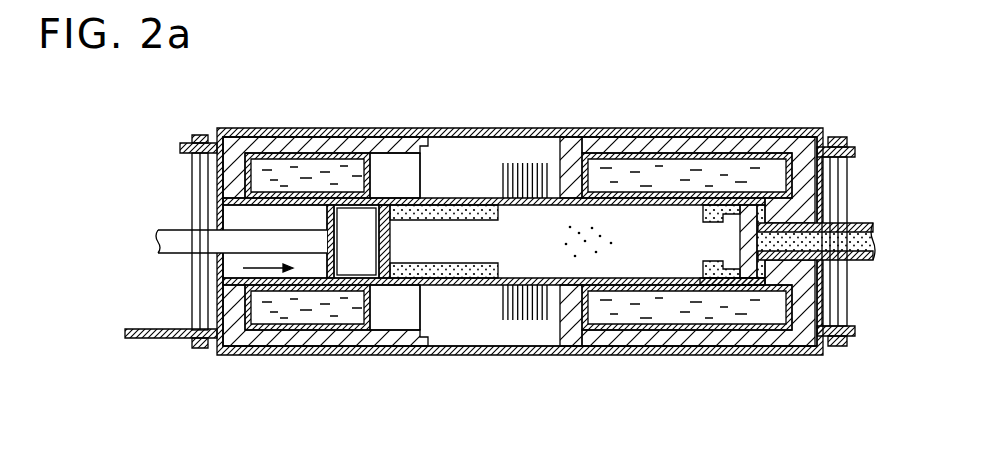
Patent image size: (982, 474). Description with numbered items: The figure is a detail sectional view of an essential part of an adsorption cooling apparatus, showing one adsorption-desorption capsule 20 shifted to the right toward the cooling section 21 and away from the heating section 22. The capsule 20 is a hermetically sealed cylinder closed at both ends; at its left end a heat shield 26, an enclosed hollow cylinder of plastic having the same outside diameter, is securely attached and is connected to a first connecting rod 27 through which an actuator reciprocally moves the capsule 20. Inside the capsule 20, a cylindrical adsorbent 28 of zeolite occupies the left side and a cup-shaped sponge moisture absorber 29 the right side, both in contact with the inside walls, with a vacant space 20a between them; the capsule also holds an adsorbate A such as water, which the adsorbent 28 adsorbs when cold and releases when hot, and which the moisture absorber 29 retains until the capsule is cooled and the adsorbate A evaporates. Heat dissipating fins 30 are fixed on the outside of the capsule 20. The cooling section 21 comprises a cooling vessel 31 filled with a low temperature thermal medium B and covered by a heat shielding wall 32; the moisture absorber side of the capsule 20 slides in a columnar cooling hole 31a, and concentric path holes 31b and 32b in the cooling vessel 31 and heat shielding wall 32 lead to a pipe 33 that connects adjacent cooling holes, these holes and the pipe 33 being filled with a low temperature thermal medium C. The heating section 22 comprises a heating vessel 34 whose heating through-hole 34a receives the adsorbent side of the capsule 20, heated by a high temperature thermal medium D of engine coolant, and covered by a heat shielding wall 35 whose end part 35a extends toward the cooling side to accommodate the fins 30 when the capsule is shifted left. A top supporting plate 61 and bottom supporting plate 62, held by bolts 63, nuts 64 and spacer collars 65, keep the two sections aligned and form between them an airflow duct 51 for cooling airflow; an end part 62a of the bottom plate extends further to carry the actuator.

The adsorption-desorption capsule 20 is at (456, 285).
The vacant space 20a is at (628, 260).
The cooling section 21 is at (721, 129).
The heating section 22 is at (280, 129).
The heat shield 26 is at (353, 285).
The first connecting rod 27 is at (170, 253).
The adsorbent 28 is at (463, 198).
The moisture absorber 29 is at (722, 285).
The heat dissipating fins 30 is at (522, 135).
The cooling vessel 31 is at (618, 162).
The cooling hole 31a is at (750, 278).
The path hole 31b is at (775, 228).
The heat shielding wall 32 is at (670, 145).
The path hole 32b is at (805, 258).
The pipe 33 is at (867, 216).
The heating vessel 34 is at (287, 176).
The heating through-hole 34a is at (300, 205).
The heat shielding wall 35 is at (251, 142).
The end part of heat shielding wall 35a is at (378, 147).
The airflow duct 51 is at (485, 170).
The top supporting plate 61 is at (568, 145).
The bottom supporting plate 62 is at (566, 355).
The end part of lower supporting plate 62a is at (145, 338).
The bolt 63 is at (196, 136).
The nut 64 is at (208, 348).
The spacer collar 65 is at (192, 190).
The adsorbate A is at (600, 250).
The low temperature thermal medium B is at (678, 312).
The low temperature thermal medium C is at (753, 225).
The high temperature thermal medium D is at (304, 137).